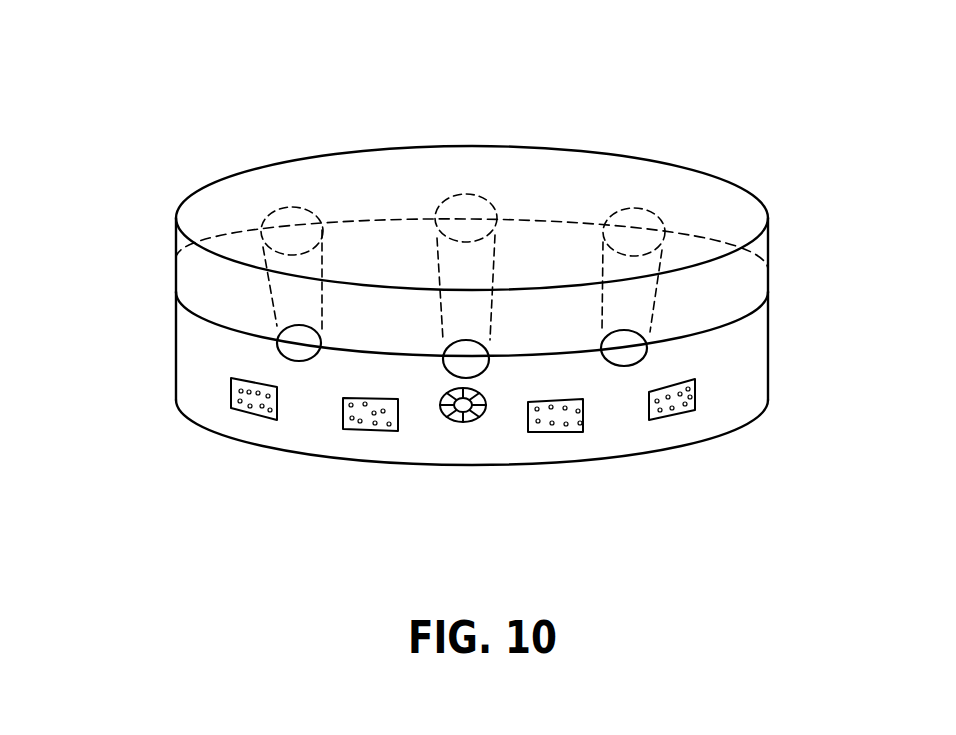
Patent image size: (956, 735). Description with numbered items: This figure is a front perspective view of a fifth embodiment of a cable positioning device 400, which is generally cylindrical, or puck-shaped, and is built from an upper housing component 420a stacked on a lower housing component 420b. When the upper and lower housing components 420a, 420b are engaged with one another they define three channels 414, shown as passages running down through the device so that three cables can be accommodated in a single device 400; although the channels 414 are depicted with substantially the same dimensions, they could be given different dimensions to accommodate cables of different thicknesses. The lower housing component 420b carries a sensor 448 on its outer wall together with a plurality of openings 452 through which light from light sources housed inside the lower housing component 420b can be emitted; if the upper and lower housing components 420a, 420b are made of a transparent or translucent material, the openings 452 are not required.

The cable positioning device 400 is at (657, 83).
The channels 414 is at (610, 268).
The upper housing component 420a is at (182, 255).
The lower housing component 420b is at (182, 350).
The sensor 448 is at (473, 422).
The openings 452 is at (252, 405).